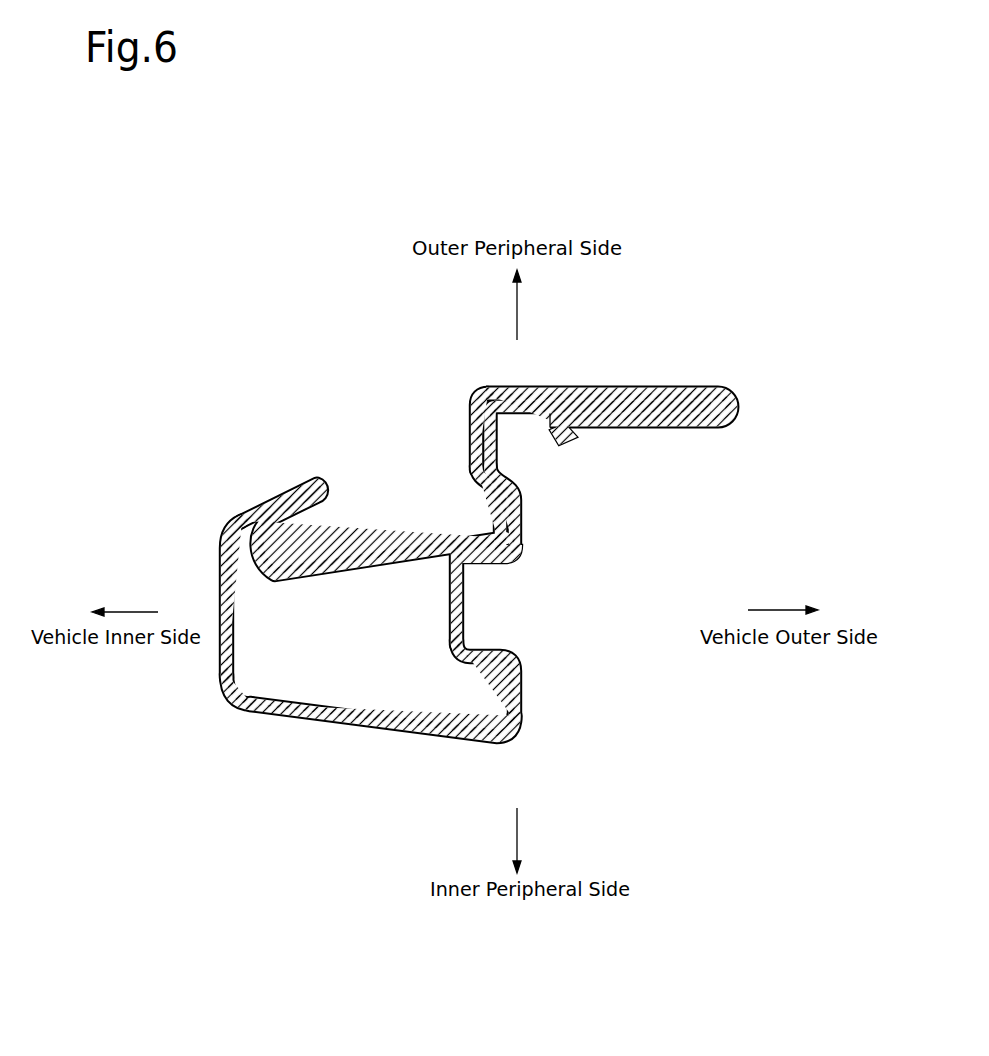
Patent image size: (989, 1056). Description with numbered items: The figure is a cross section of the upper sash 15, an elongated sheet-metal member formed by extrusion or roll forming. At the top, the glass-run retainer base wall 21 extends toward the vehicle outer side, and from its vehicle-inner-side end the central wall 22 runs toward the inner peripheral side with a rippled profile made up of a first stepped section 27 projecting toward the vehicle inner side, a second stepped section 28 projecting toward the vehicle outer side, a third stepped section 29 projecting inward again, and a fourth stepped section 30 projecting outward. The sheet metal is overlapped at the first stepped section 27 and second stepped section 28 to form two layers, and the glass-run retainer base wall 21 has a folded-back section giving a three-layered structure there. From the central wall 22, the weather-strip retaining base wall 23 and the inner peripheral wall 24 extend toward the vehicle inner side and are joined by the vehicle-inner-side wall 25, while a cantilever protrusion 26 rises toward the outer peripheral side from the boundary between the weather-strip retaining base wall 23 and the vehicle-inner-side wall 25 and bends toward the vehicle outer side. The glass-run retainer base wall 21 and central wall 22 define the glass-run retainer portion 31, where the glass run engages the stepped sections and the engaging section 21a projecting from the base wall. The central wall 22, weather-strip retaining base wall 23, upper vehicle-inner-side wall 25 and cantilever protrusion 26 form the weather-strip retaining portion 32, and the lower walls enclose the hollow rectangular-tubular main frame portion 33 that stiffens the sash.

The upper sash 15 is at (682, 340).
The glass-run retainer base wall 21 is at (630, 386).
The engaging section 21a is at (566, 433).
The central wall 22 is at (588, 462).
The weather-strip retaining base wall 23 is at (385, 549).
The inner peripheral wall 24 is at (374, 729).
The vehicle-inner-side wall 25 is at (219, 583).
The cantilever protrusion 26 is at (289, 491).
The first stepped section 27 is at (498, 452).
The second stepped section 28 is at (521, 516).
The third stepped section 29 is at (464, 598).
The fourth stepped section 30 is at (527, 687).
The glass-run retainer portion 31 is at (678, 503).
The weather-strip retaining portion 32 is at (412, 480).
The main frame portion 33 is at (262, 708).